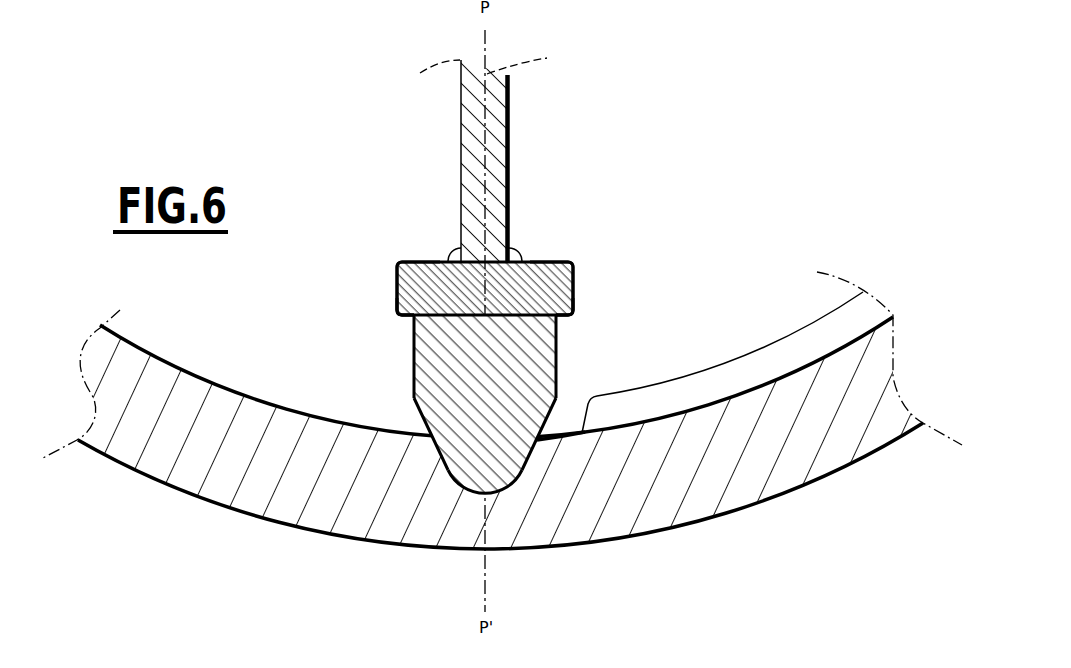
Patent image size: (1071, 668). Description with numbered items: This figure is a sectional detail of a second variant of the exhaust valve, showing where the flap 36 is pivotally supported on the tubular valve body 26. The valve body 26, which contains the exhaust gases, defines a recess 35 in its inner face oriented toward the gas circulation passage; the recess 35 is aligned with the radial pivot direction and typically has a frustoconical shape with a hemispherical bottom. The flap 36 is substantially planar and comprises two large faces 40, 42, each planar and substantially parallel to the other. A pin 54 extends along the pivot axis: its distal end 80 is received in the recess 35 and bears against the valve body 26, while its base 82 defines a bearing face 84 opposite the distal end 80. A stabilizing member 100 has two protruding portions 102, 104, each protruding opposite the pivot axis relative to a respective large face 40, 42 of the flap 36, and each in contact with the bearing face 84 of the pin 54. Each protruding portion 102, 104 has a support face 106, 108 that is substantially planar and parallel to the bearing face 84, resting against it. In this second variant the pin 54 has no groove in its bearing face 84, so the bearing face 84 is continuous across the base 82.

The valve body 26 is at (837, 443).
The recess 35 is at (537, 457).
The flap 36 is at (491, 153).
The large face 40 is at (461, 155).
The large face 42 is at (508, 156).
The pin 54 is at (455, 410).
The distal end 80 is at (465, 463).
The base 82 is at (389, 459).
The bearing face 84 is at (430, 385).
The stabilizing member 100 is at (484, 258).
The protruding portion 102 is at (427, 278).
The protruding portion 104 is at (552, 270).
The support face 106 is at (408, 317).
The support face 108 is at (557, 316).